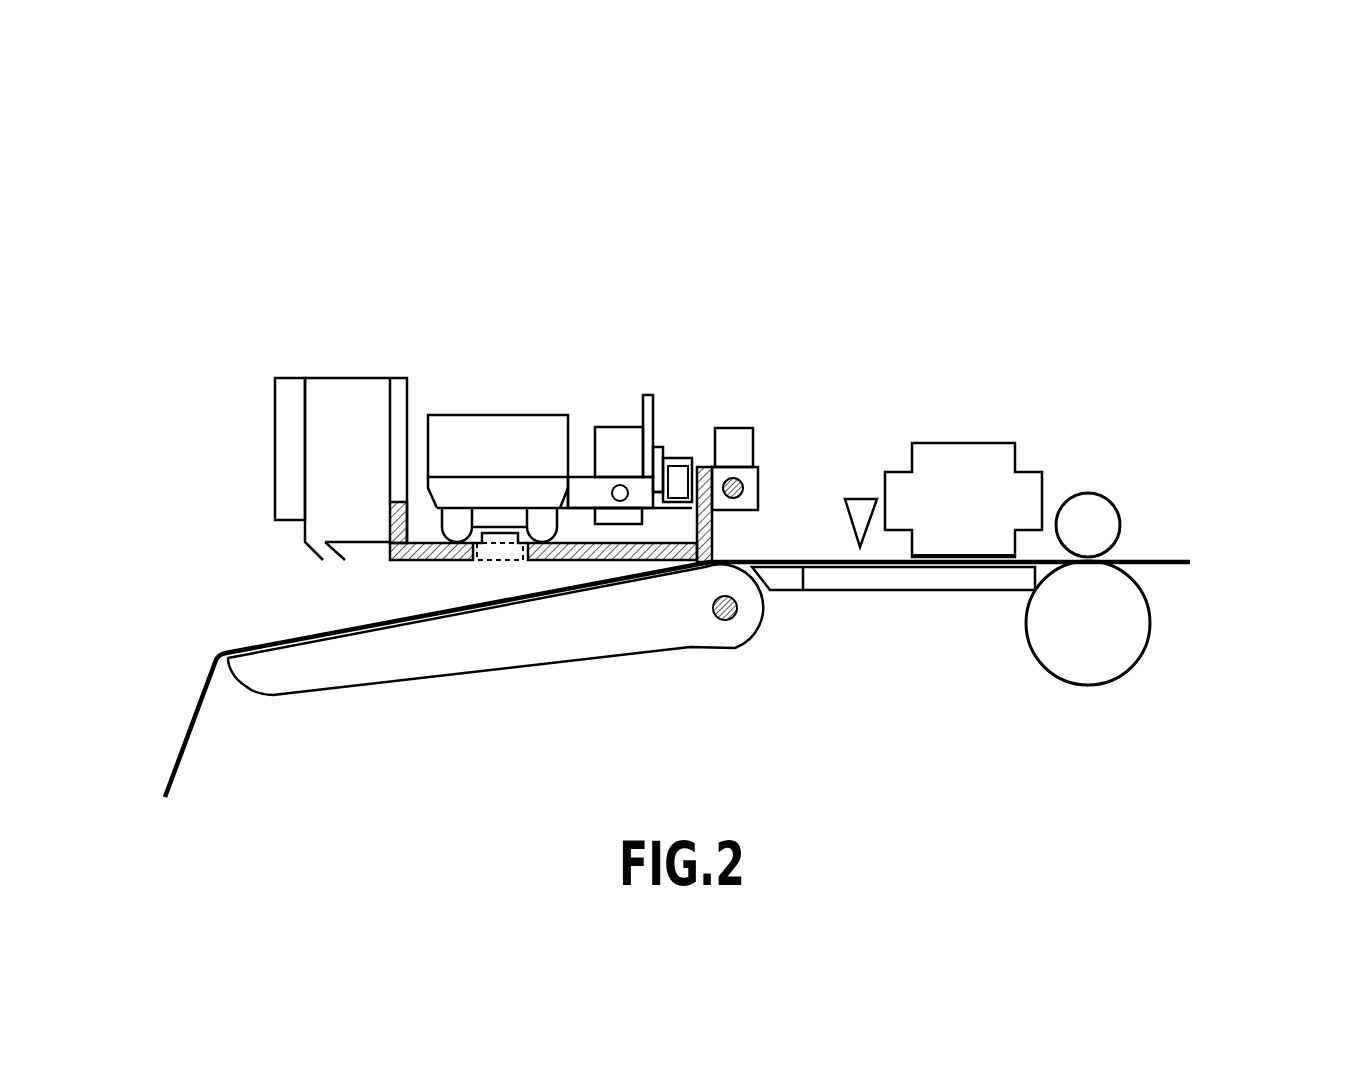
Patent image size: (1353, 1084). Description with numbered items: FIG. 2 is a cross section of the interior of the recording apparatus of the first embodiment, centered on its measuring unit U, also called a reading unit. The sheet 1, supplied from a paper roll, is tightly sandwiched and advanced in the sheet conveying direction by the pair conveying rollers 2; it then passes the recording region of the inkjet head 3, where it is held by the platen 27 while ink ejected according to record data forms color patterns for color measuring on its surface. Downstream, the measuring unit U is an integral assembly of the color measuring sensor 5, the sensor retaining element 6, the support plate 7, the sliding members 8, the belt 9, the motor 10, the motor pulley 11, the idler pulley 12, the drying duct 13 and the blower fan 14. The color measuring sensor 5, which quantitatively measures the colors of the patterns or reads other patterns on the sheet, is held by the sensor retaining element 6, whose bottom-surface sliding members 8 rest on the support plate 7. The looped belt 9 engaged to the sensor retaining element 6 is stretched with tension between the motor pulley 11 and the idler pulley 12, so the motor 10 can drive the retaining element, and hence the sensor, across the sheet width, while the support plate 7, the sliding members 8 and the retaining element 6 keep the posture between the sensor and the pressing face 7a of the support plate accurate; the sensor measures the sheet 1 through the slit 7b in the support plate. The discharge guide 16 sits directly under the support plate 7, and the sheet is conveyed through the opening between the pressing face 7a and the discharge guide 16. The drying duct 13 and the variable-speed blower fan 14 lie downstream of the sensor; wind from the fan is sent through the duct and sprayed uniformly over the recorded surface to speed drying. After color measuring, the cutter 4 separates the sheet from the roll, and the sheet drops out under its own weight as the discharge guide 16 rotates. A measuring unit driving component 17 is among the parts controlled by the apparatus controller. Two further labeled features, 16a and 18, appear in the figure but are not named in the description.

The measuring unit U is at (500, 264).
The sheet 1 is at (200, 707).
The pair conveying rollers 2 is at (1098, 590).
The inkjet head 3 is at (957, 455).
The cutter 4 is at (860, 498).
The color measuring sensor 5 is at (492, 452).
The sensor retaining element 6 is at (450, 497).
The support plate 7 is at (417, 565).
The pressing face 7a is at (570, 563).
The slit 7b is at (500, 552).
The sliding members 8 is at (463, 525).
The belt 9 is at (680, 480).
The motor 10 is at (620, 440).
The motor pulley 11 is at (670, 460).
The idler pulley 12 is at (713, 460).
The drying duct 13 is at (347, 395).
The blower fan 14 is at (288, 437).
The discharge guide 16 is at (317, 673).
The pivot shaft 16a is at (725, 625).
The measuring unit driving component 17 is at (735, 450).
The shaft holder 18 is at (745, 482).
The platen 27 is at (920, 573).